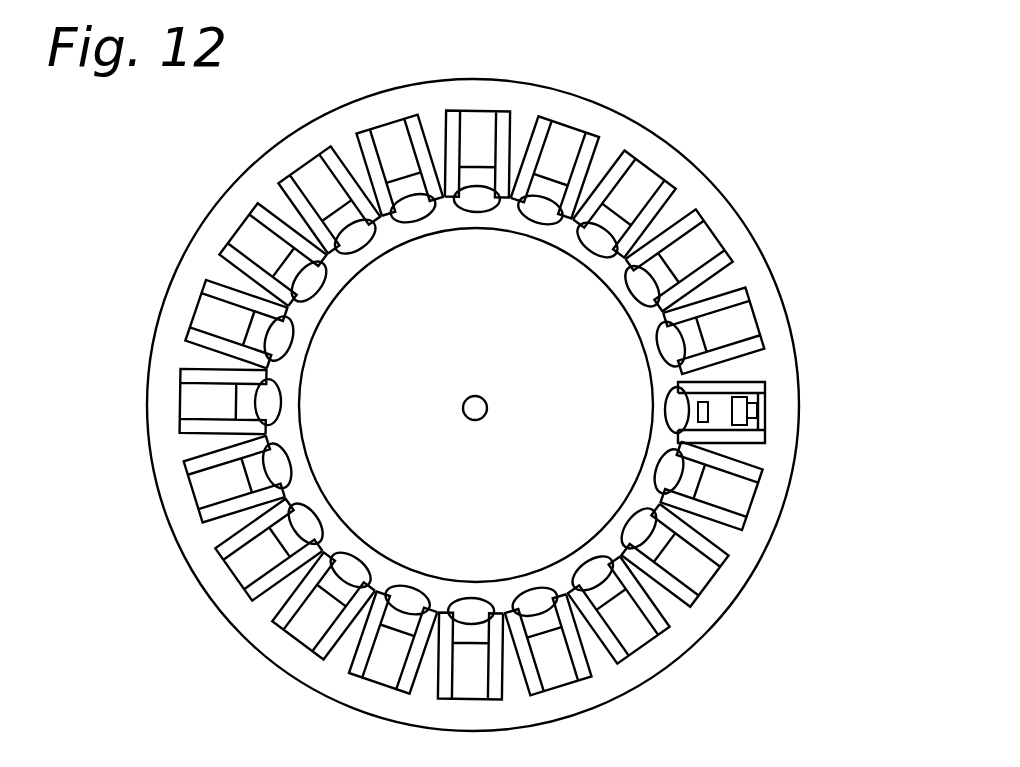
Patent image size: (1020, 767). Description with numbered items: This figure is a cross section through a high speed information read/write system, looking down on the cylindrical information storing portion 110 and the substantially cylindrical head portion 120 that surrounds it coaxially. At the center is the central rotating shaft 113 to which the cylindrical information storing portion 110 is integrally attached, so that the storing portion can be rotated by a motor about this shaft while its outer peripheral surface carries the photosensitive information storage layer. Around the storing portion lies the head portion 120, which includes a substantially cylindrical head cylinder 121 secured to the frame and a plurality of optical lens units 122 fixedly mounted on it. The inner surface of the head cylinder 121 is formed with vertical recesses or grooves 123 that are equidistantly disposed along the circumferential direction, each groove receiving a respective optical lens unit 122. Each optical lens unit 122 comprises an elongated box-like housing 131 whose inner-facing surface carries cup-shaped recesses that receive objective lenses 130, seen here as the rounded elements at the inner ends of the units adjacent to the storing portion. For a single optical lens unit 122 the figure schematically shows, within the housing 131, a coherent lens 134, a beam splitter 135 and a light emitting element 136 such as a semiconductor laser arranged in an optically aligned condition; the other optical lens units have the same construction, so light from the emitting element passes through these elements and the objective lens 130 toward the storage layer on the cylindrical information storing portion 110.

The cylindrical information storing portion 110 is at (425, 316).
The central rotating shaft 113 is at (481, 419).
The head portion 120 is at (501, 397).
The head cylinder 121 is at (672, 172).
The optical lens unit 122 is at (685, 605).
The vertical groove 123 is at (606, 646).
The objective lens 130 is at (672, 411).
The housing 131 is at (766, 391).
The coherent lens 134 is at (707, 402).
The beam splitter 135 is at (745, 397).
The light emitting element 136 is at (763, 412).